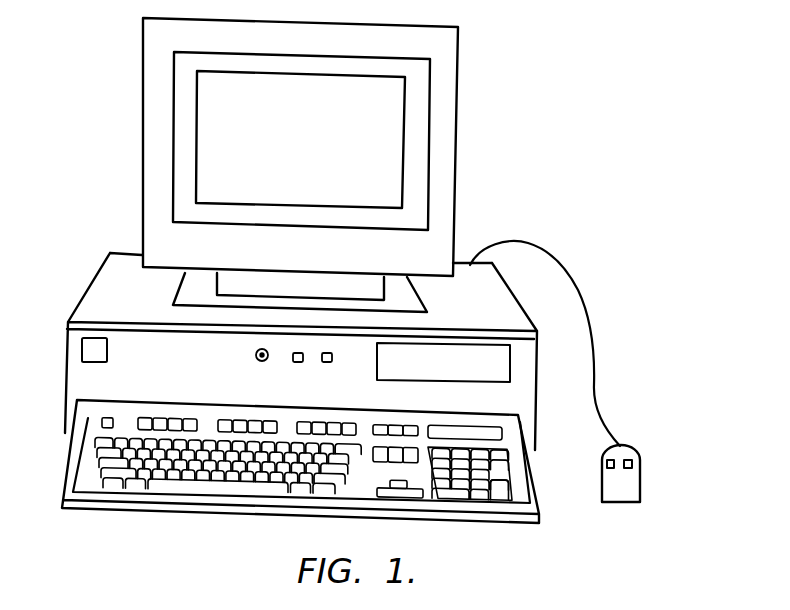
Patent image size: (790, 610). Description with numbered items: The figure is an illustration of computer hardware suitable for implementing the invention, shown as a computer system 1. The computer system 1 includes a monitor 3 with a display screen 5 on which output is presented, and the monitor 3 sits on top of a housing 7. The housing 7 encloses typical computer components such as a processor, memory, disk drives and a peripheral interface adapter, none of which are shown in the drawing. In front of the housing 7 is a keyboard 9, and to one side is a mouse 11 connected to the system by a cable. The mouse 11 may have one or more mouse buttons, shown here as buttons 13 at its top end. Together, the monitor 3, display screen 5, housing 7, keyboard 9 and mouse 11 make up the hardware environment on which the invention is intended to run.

The computer system 1 is at (601, 50).
The monitor 3 is at (458, 122).
The display screen 5 is at (381, 114).
The housing 7 is at (492, 310).
The keyboard 9 is at (250, 517).
The mouse 11 is at (630, 484).
The buttons 13 is at (609, 461).